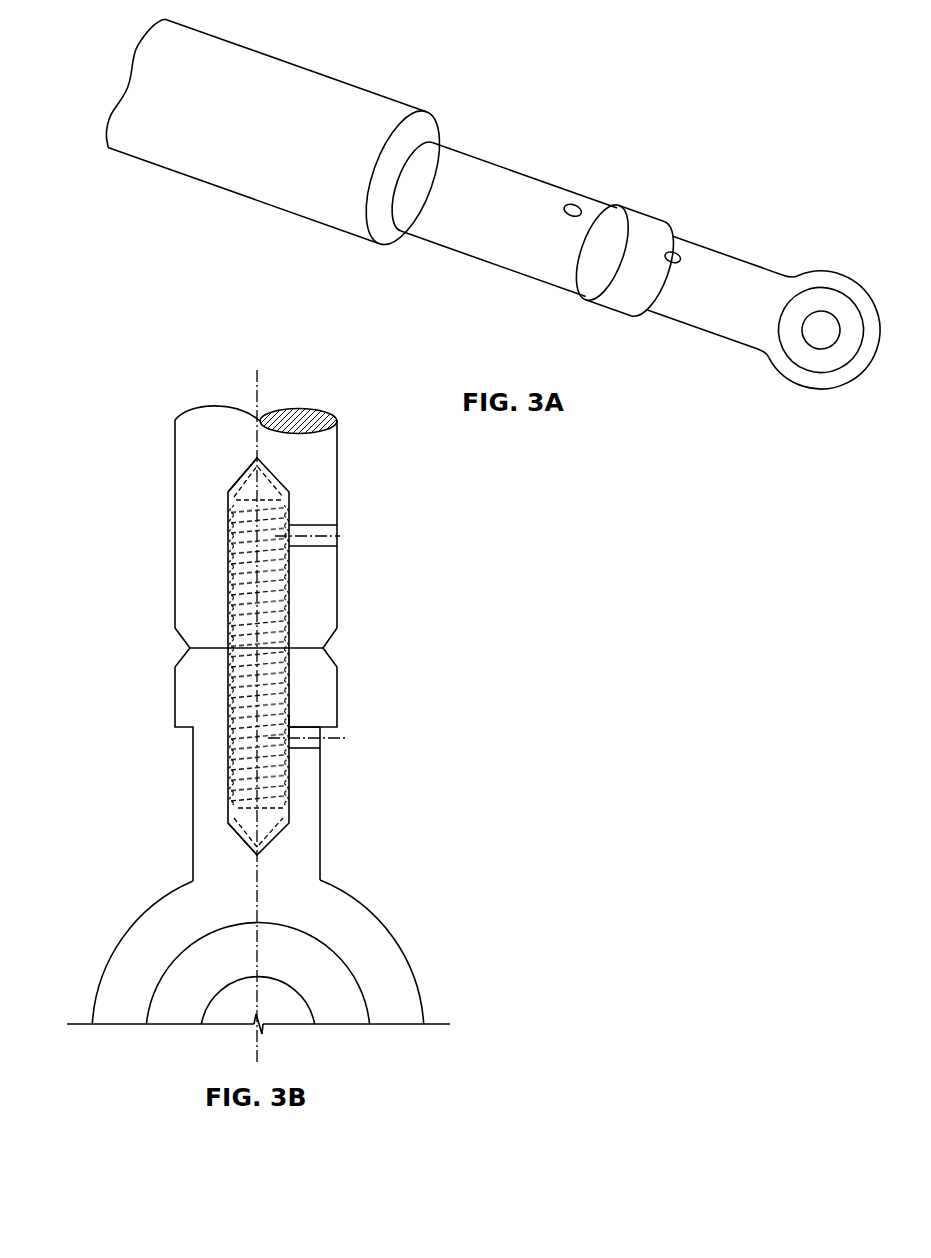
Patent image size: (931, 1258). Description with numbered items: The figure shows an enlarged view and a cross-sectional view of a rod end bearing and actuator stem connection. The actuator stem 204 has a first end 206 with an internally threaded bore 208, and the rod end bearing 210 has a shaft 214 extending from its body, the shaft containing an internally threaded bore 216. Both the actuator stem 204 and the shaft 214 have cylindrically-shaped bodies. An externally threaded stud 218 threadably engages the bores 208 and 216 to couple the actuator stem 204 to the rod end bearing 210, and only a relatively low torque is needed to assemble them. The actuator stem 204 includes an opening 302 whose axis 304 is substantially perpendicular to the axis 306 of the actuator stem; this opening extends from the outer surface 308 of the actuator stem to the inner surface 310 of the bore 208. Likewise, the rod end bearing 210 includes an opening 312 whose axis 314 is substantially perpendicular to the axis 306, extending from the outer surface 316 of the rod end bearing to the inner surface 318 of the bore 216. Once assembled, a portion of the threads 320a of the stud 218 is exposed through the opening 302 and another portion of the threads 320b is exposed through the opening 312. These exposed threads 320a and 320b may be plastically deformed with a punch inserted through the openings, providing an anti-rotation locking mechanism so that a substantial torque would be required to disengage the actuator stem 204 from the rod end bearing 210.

In FIG. 3A, the actuator stem 204 is at (338, 80).
In FIG. 3B, the actuator stem 204 is at (175, 582).
In FIG. 3A, the first end 206 is at (409, 107).
In FIG. 3B, the internally threaded bore 208 is at (232, 494).
In FIG. 3A, the rod end bearing 210 is at (812, 390).
In FIG. 3B, the rod end bearing 210 is at (420, 977).
In FIG. 3A, the shaft 214 is at (707, 320).
In FIG. 3B, the internally threaded bore 216 is at (230, 828).
In FIG. 3B, the externally threaded stud 218 is at (283, 660).
In FIG. 3A, the opening 302 is at (572, 203).
In FIG. 3B, the opening 302 is at (340, 537).
In FIG. 3B, the axis 304 is at (340, 537).
In FIG. 3B, the axis 306 is at (257, 385).
In FIG. 3A, the outer surface 308 is at (482, 160).
In FIG. 3B, the outer surface 308 is at (338, 582).
In FIG. 3B, the inner surface 310 is at (290, 516).
In FIG. 3A, the opening 312 is at (676, 248).
In FIG. 3B, the opening 312 is at (320, 745).
In FIG. 3B, the axis 314 is at (320, 740).
In FIG. 3A, the outer surface 316 is at (743, 270).
In FIG. 3B, the outer surface 316 is at (323, 787).
In FIG. 3B, the inner surface 318 is at (290, 808).
In FIG. 3B, the threads 320a is at (290, 522).
In FIG. 3B, the threads 320b is at (290, 727).